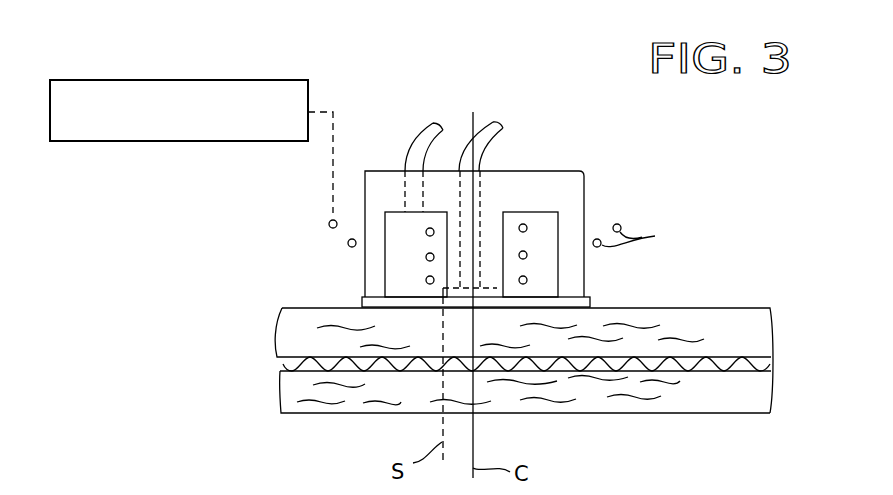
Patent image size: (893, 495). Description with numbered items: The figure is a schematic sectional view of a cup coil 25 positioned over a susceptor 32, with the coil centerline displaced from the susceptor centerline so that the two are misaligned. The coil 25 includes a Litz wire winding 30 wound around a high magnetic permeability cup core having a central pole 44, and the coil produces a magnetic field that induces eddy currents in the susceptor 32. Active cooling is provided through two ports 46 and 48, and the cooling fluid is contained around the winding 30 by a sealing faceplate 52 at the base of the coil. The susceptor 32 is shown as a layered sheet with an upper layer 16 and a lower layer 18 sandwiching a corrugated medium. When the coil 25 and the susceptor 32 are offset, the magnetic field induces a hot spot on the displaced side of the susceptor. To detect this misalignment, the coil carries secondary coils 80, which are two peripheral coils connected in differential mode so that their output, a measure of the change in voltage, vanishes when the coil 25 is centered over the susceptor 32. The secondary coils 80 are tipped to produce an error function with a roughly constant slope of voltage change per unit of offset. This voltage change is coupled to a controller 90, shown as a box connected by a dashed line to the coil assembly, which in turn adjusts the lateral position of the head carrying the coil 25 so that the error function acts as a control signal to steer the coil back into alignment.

The controller 90 is at (258, 80).
The coil 25 is at (357, 258).
The central pole 44 is at (453, 238).
The Litz wire winding 30 is at (525, 224).
The port 46 is at (428, 122).
The port 48 is at (494, 122).
The secondary coils 80 is at (641, 238).
The sealing faceplate 52 is at (547, 296).
The upper liner 16 is at (770, 308).
The susceptor 32 is at (278, 363).
The lower liner 18 is at (771, 413).